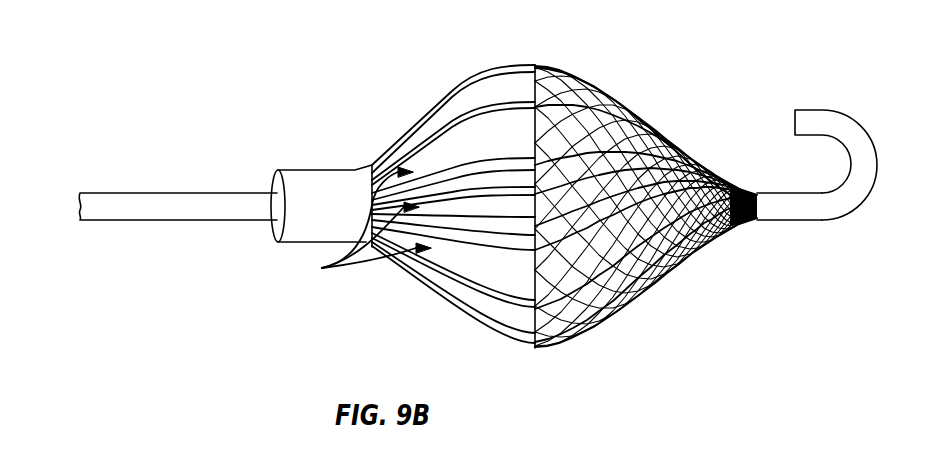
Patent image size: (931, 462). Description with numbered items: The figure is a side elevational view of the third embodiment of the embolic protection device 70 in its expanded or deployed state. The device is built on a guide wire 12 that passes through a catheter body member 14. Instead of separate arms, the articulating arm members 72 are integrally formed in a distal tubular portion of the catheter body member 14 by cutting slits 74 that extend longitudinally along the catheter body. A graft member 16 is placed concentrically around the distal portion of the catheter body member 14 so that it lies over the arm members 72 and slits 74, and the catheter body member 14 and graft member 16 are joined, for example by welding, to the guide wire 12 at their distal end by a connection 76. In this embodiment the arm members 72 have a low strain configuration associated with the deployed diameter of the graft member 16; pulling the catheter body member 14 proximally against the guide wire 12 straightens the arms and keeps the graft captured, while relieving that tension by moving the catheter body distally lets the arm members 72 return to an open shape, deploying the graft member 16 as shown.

The embolic protection device 70 is at (246, 78).
The guide wire 12 is at (151, 205).
The catheter body member 14 is at (341, 169).
The graft member 16 is at (670, 135).
The articulating arm members 72 is at (464, 125).
The slits 74 is at (322, 270).
The connection 76 is at (757, 193).